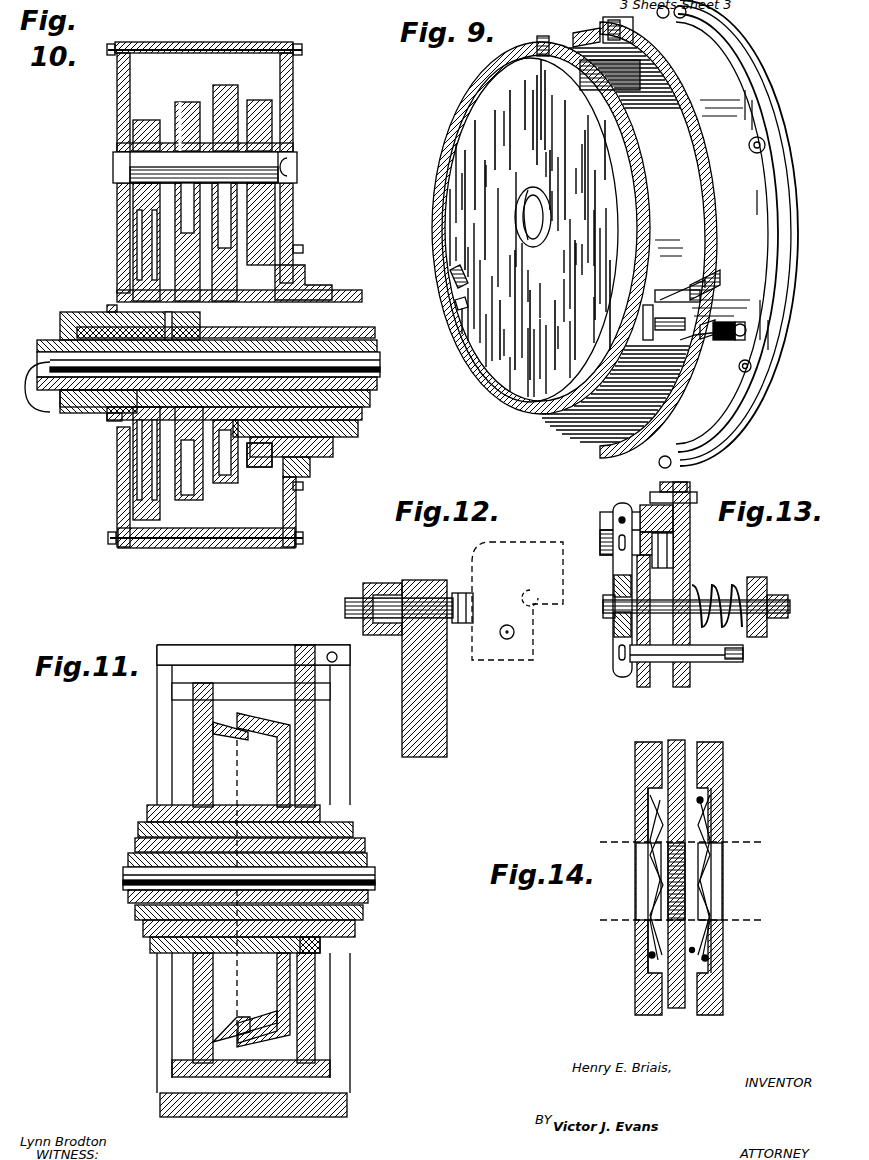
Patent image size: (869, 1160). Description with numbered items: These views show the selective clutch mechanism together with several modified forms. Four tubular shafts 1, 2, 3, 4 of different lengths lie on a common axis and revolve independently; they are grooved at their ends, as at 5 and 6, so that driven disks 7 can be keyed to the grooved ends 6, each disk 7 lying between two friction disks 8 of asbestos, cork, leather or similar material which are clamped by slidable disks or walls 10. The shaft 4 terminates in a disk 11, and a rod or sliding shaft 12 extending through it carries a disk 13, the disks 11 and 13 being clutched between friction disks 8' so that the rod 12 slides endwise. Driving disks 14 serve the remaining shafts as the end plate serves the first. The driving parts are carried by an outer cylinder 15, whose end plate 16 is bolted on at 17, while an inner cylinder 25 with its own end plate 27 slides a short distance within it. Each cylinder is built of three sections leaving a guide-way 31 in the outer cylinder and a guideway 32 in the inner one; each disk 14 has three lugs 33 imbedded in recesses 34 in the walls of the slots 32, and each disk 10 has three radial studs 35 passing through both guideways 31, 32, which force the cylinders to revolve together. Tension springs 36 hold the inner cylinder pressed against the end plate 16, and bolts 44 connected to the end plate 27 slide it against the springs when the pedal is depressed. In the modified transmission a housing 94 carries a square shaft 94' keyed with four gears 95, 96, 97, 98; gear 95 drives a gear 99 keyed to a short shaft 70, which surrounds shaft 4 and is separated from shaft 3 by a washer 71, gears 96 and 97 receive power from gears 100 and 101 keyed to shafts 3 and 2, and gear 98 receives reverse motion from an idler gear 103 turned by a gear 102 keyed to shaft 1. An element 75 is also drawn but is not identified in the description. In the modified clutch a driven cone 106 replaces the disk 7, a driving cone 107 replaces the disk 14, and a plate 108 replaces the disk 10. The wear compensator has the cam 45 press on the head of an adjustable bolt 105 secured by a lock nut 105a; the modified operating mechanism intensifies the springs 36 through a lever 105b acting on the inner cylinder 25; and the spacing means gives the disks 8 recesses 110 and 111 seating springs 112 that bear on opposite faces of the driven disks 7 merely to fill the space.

In FIG. 10, the tubular shaft 1 is at (360, 295).
In FIG. 11, the tubular shaft 1 is at (148, 812).
In FIG. 10, the tubular shaft 2 is at (360, 418).
In FIG. 11, the tubular shaft 2 is at (353, 830).
In FIG. 10, the tubular shaft 3 is at (375, 330).
In FIG. 11, the tubular shaft 3 is at (135, 848).
In FIG. 10, the tubular shaft 4 is at (372, 395).
In FIG. 11, the tubular shaft 4 is at (368, 897).
In FIG. 10, the groove 5 is at (305, 282).
In FIG. 11, the grooved end 6 is at (300, 950).
In FIG. 14, the driven disk 7 is at (675, 743).
In FIG. 14, the friction disk 8 is at (681, 878).
In FIG. 9, the friction disk 8' is at (704, 285).
In FIG. 9, the slidable disk 10 is at (718, 290).
In FIG. 12, the slidable disk 10 is at (430, 737).
In FIG. 9, the disk 11 is at (665, 332).
In FIG. 10, the sliding shaft 12 is at (370, 370).
In FIG. 11, the sliding shaft 12 is at (118, 878).
In FIG. 9, the disk 13 is at (660, 300).
In FIG. 9, the driving disk 14 is at (517, 423).
In FIG. 9, the outer cylinder 15 is at (713, 72).
In FIG. 13, the outer cylinder 15 is at (603, 522).
In FIG. 11, the outer cylinder 15 is at (175, 645).
In FIG. 13, the end plate 16 is at (690, 533).
In FIG. 9, the bolt 17 is at (765, 140).
In FIG. 9, the inner cylinder 25 is at (455, 130).
In FIG. 13, the inner cylinder 25 is at (598, 545).
In FIG. 11, the inner cylinder 25 is at (220, 1077).
In FIG. 13, the end plate 27 is at (642, 687).
In FIG. 9, the guide-way 31 is at (732, 320).
In FIG. 11, the guide-way 31 is at (253, 655).
In FIG. 9, the guideway 32 is at (690, 365).
In FIG. 11, the guideway 32 is at (251, 691).
In FIG. 9, the lug 33 is at (548, 38).
In FIG. 9, the recess 34 is at (467, 305).
In FIG. 9, the radial stud 35 is at (605, 35).
In FIG. 13, the tension spring 36 is at (715, 585).
In FIG. 13, the bolt 44 is at (740, 665).
In FIG. 12, the cam 45 is at (500, 662).
In FIG. 10, the short shaft 70 is at (105, 415).
In FIG. 10, the washer 71 is at (160, 307).
In FIG. 10, the bracket 75 is at (35, 400).
In FIG. 10, the housing 94 is at (223, 167).
In FIG. 10, the square shaft 94' is at (184, 167).
In FIG. 10, the gear 95 is at (148, 124).
In FIG. 10, the gear 96 is at (188, 102).
In FIG. 10, the gear 97 is at (226, 87).
In FIG. 10, the gear 98 is at (259, 104).
In FIG. 10, the gear 99 is at (148, 254).
In FIG. 10, the gear 100 is at (190, 500).
In FIG. 10, the gear 101 is at (225, 483).
In FIG. 10, the gear 102 is at (265, 467).
In FIG. 10, the idler gear 103 is at (290, 238).
In FIG. 12, the bolt 105 is at (423, 598).
In FIG. 12, the lock nut 105a is at (380, 568).
In FIG. 13, the lever 105b is at (620, 573).
In FIG. 11, the driven cone 106 is at (262, 1040).
In FIG. 11, the driving cone 107 is at (222, 722).
In FIG. 11, the plate 108 is at (305, 650).
In FIG. 14, the recess 110 is at (650, 795).
In FIG. 14, the recess 111 is at (715, 798).
In FIG. 14, the spring 112 is at (650, 955).